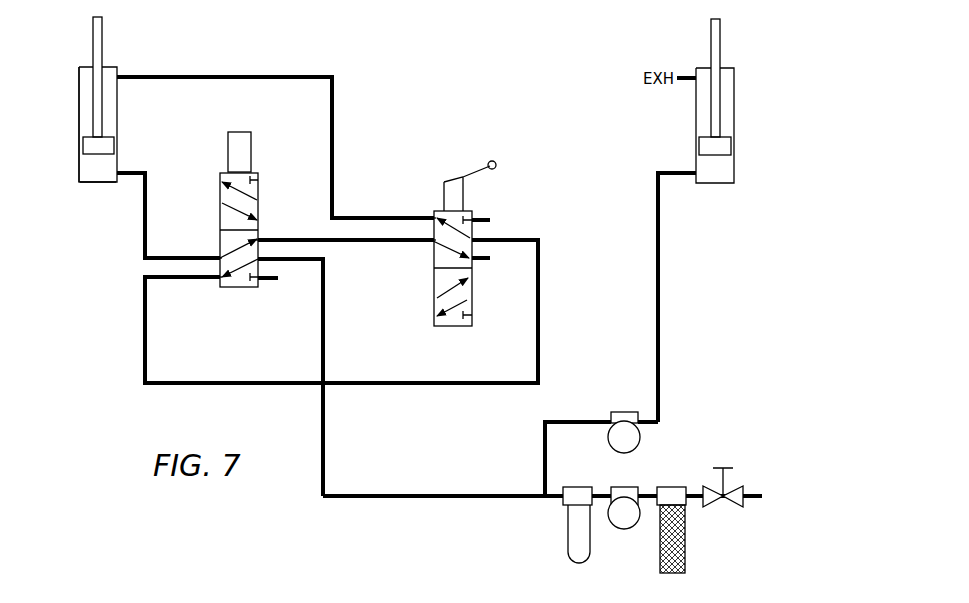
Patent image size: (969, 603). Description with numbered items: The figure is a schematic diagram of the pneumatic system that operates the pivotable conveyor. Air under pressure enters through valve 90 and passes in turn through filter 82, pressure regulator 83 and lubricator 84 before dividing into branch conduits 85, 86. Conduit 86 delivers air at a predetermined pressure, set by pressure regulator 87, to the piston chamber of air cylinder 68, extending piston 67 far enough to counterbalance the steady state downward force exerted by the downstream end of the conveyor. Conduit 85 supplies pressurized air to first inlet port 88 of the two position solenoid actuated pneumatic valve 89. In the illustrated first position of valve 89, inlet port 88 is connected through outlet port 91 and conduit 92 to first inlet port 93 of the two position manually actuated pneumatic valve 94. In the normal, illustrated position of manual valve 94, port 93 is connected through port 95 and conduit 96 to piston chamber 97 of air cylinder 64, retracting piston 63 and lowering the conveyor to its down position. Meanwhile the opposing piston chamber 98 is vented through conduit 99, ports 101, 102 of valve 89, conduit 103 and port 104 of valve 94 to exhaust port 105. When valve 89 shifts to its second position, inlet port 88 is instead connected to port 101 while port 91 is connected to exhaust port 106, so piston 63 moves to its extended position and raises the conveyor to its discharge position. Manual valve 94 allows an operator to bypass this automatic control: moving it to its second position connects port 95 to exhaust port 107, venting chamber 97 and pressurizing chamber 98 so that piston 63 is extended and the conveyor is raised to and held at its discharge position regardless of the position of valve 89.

The piston 63 is at (102, 33).
The air cylinder 64 is at (117, 103).
The piston 67 is at (711, 41).
The air cylinder 68 is at (696, 107).
The filter 82 is at (686, 545).
The pressure regulator 83 is at (622, 530).
The lubricator 84 is at (566, 550).
The branch conduit 85 is at (423, 498).
The branch conduit 86 is at (545, 460).
The pressure regulator 87 is at (612, 444).
The first inlet port 88 is at (260, 260).
The two position solenoid actuated pneumatic valve 89 is at (273, 163).
The valve 90 is at (718, 468).
The outlet port 91 is at (220, 280).
The conduit 92 is at (247, 385).
The first inlet port 93 is at (473, 240).
The two position manually actuated pneumatic valve 94 is at (430, 183).
The port 95 is at (434, 217).
The conduit 96 is at (292, 75).
The piston chamber 97 is at (79, 103).
The opposing piston chamber 98 is at (93, 178).
The conduit 99 is at (145, 245).
The port 101 is at (219, 257).
The port 102 is at (258, 230).
The conduit 103 is at (350, 242).
The port 104 is at (432, 243).
The exhaust port 105 is at (474, 262).
The exhaust port 106 is at (258, 286).
The exhaust port 107 is at (474, 214).